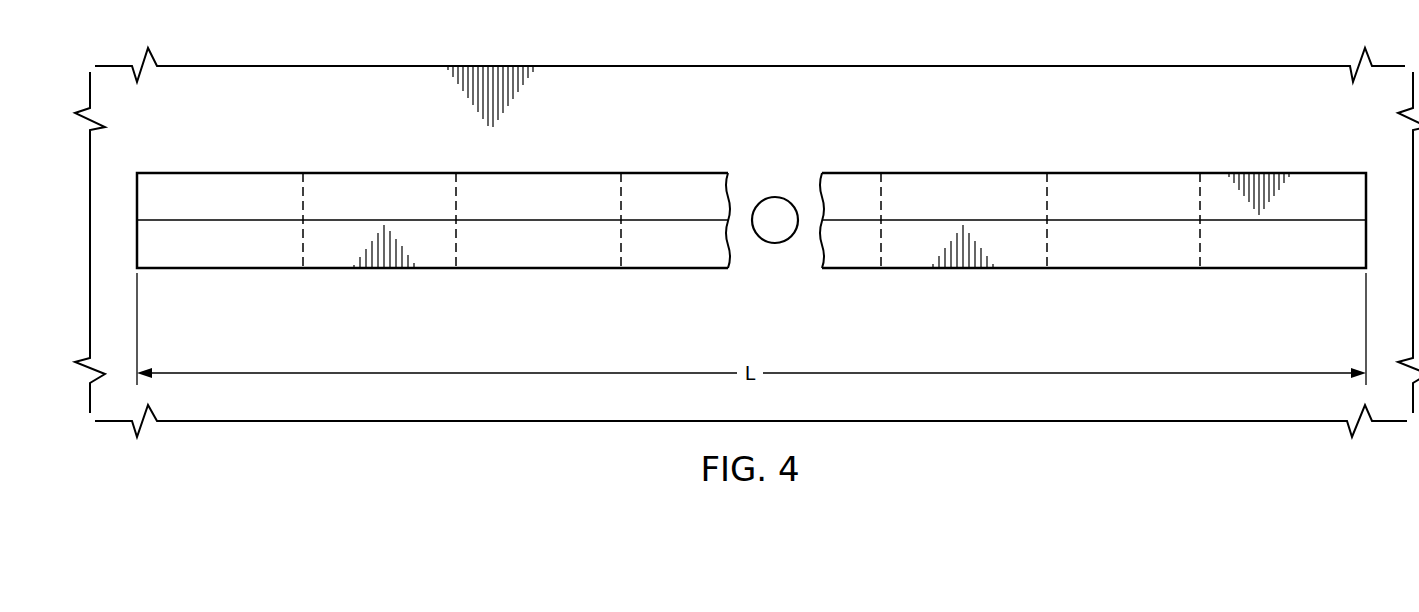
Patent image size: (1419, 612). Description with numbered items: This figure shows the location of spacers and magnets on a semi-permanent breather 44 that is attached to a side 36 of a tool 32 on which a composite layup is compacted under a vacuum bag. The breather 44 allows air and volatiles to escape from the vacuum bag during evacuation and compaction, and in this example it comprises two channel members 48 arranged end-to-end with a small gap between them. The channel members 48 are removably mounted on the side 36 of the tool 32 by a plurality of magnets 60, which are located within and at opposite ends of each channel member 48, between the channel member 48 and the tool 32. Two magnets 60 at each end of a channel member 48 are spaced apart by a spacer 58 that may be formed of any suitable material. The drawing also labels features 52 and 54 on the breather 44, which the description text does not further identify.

The tool 32 is at (1236, 92).
The side 36 is at (748, 75).
The breather 44 is at (1093, 280).
The channel member 48 is at (218, 268).
The contact region 52 is at (349, 172).
The fastener opening 54 is at (776, 235).
The spacer 58 is at (228, 185).
The magnet 60 is at (400, 185).